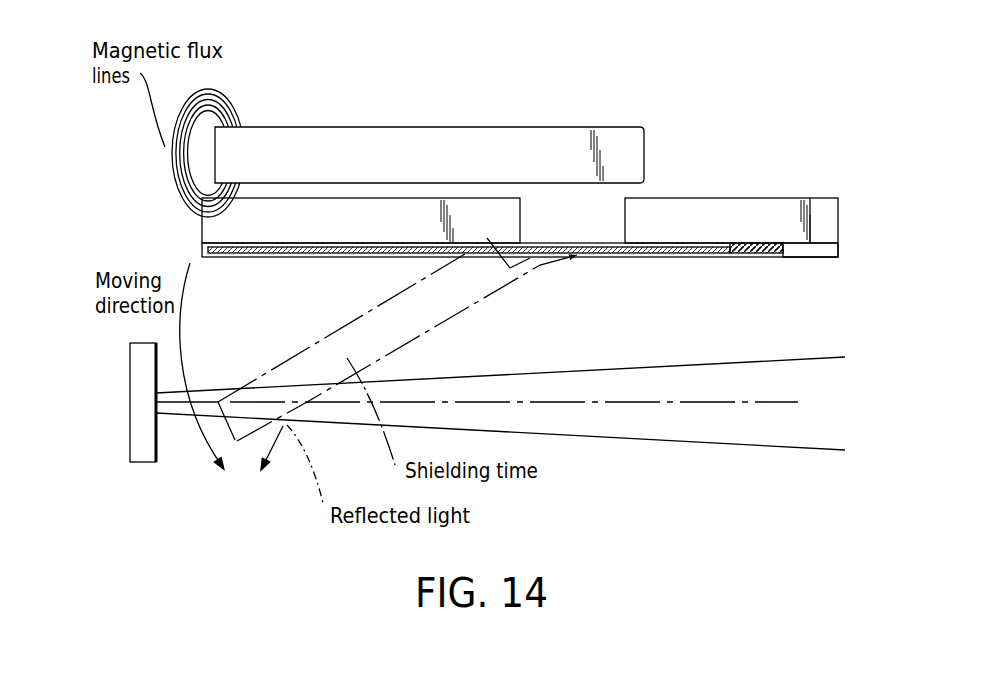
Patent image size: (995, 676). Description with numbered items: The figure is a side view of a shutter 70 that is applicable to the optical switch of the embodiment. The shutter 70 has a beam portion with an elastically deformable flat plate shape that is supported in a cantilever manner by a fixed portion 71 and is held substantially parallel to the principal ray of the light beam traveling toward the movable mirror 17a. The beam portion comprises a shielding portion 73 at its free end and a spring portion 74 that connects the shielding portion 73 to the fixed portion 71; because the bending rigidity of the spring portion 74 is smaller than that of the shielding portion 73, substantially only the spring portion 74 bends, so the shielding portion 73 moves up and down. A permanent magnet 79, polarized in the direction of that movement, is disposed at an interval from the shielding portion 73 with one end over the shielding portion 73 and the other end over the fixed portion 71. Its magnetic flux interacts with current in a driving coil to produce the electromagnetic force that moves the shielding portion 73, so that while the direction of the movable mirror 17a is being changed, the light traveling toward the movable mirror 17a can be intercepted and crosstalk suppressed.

The shutter 70 is at (112, 115).
The permanent magnet 79 is at (543, 142).
The shielding portion 73 is at (323, 223).
The fixed portion 71 is at (715, 225).
The spring portion 74 is at (577, 257).
The movable mirror 17a is at (130, 372).